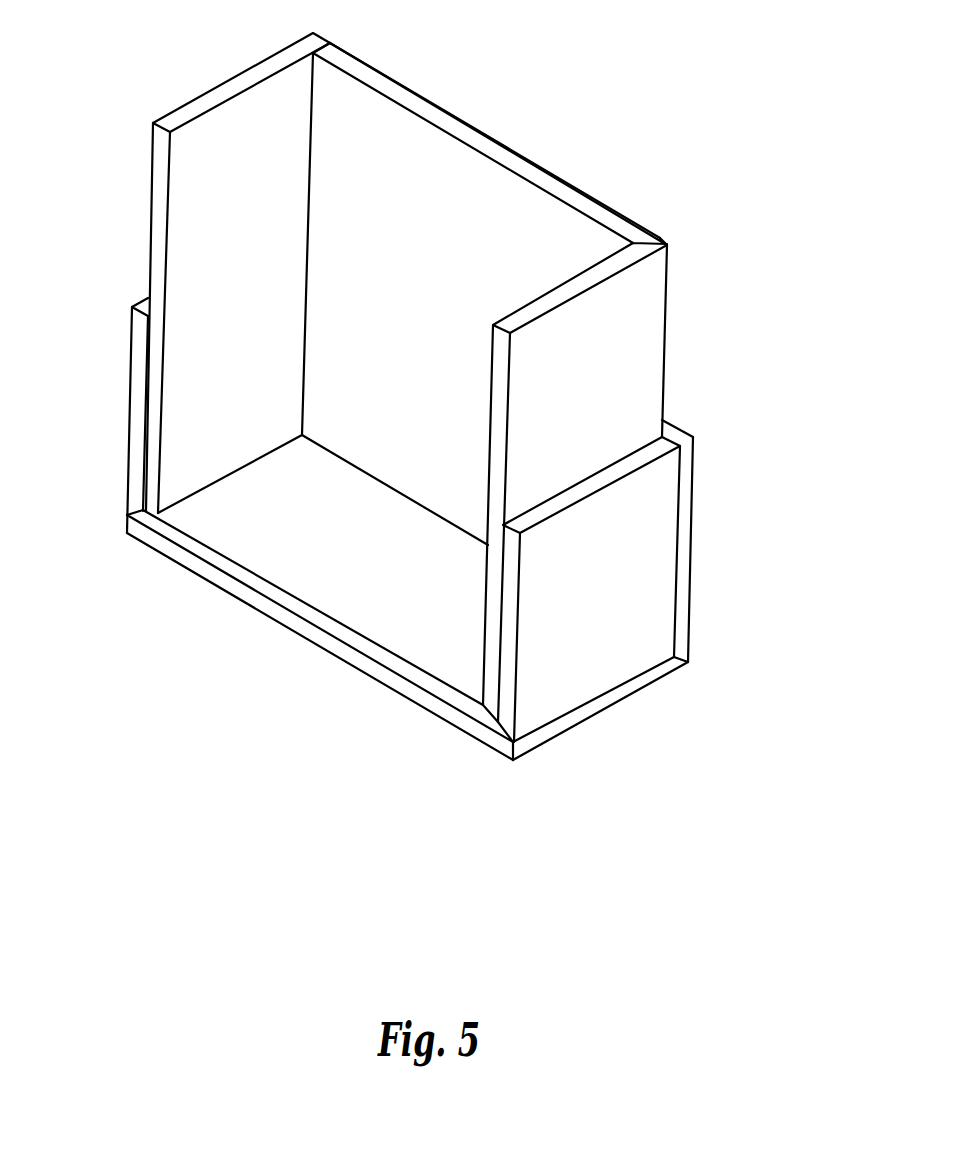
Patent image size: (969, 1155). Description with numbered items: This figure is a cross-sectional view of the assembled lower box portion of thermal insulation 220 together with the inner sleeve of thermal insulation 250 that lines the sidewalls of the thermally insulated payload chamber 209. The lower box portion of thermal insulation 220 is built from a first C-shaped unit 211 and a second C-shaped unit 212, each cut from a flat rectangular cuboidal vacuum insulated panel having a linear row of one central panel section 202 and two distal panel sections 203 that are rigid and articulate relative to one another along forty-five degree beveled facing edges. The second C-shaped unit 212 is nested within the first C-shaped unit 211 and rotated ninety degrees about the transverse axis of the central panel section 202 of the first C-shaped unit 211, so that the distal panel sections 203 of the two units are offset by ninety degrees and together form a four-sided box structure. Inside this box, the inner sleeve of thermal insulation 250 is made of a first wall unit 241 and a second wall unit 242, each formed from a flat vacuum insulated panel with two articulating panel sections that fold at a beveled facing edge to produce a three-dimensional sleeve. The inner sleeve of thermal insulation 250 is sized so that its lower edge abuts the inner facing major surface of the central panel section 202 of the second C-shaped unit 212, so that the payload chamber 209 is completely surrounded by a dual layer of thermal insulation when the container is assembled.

The thermally insulated payload chamber 209 is at (410, 136).
The inner sleeve of thermal insulation 250 is at (433, 304).
The first wall unit 241 is at (186, 206).
The second wall unit 242 is at (647, 344).
The central panel section 202 is at (276, 568).
The distal panel section 203 is at (133, 398).
The first C-shaped unit 211 is at (446, 717).
The second C-shaped unit 212 is at (133, 448).
The lower box portion of thermal insulation 220 is at (688, 706).